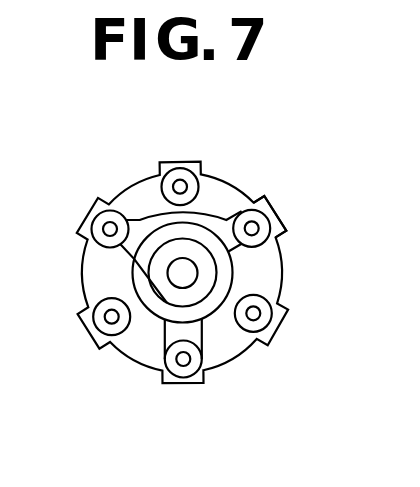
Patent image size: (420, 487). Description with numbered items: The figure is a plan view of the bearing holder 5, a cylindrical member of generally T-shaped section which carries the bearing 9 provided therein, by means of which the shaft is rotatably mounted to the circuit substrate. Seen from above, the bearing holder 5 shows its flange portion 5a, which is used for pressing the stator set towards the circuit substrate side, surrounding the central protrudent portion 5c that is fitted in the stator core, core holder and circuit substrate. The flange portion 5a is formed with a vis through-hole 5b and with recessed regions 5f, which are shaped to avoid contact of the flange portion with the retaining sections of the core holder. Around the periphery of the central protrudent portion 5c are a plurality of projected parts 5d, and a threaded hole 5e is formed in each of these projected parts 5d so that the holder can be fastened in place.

The bearing holder 5 is at (266, 197).
The flange portion 5a is at (97, 282).
The vis through-hole 5b is at (198, 185).
The central protrudent portion 5c is at (213, 321).
The projected part 5d is at (268, 260).
The threaded hole 5e is at (252, 228).
The recessed region 5f is at (127, 184).
The bearing 9 is at (190, 250).